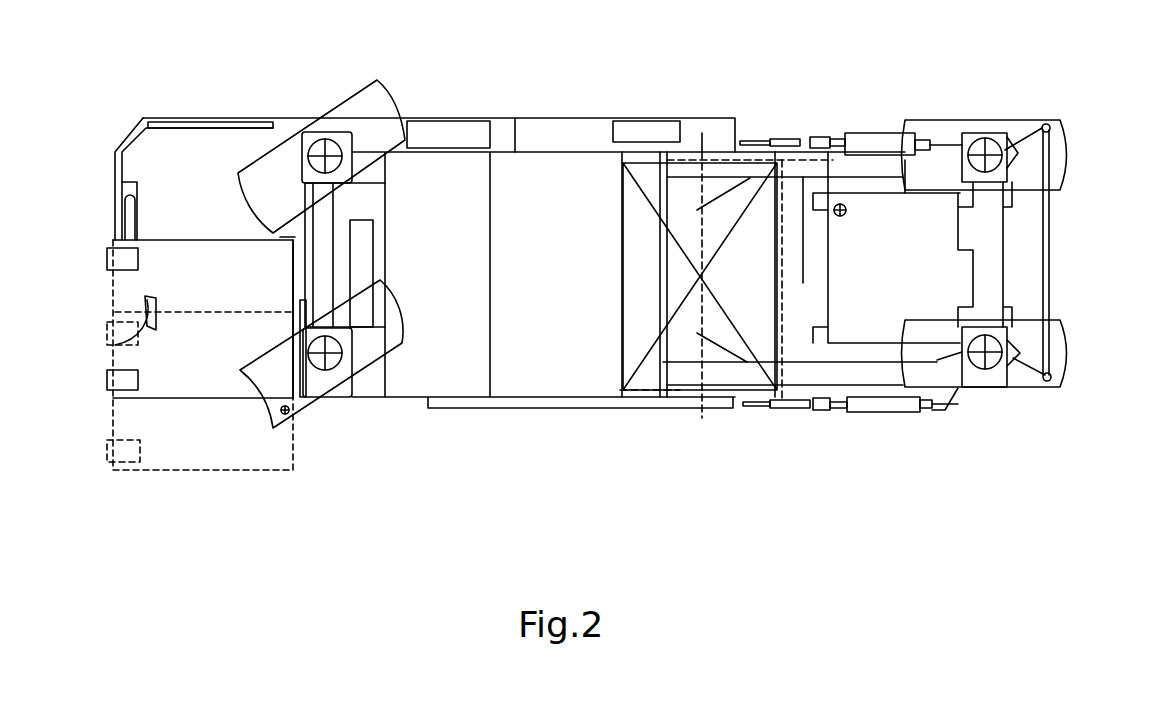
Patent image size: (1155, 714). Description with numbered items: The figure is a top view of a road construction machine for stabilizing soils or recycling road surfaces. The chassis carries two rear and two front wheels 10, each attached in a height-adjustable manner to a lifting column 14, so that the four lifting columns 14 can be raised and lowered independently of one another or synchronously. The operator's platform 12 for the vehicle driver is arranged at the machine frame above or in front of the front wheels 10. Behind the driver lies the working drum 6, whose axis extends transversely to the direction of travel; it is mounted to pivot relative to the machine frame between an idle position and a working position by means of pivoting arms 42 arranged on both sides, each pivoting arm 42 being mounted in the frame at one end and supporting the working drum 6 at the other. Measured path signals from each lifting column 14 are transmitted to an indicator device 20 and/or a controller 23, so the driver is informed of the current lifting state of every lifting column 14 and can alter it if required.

The working drum 6 is at (783, 283).
The wheel 10 is at (367, 103).
The operator's platform 12 is at (230, 377).
The lifting column 14 is at (318, 150).
The indicator device 20 is at (147, 302).
The controller 23 is at (140, 335).
The pivoting arm 42 is at (550, 137).